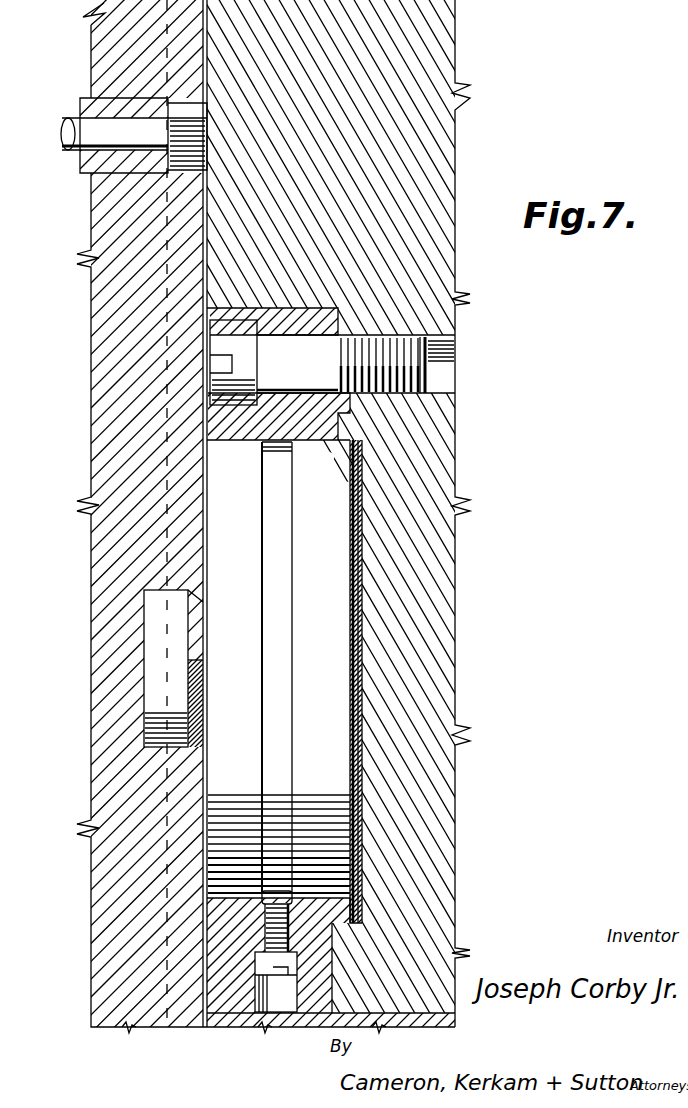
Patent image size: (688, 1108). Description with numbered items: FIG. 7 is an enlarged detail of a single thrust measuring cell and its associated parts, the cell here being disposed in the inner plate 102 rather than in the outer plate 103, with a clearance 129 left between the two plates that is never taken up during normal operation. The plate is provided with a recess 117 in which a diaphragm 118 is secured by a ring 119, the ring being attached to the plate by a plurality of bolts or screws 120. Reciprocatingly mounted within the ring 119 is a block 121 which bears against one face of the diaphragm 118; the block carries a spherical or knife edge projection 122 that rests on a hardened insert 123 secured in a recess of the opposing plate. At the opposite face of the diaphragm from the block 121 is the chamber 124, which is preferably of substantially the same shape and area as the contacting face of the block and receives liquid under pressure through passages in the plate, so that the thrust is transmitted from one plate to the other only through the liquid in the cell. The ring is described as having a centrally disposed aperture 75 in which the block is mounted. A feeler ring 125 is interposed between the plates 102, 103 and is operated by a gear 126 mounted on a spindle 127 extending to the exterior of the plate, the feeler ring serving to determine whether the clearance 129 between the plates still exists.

The aperture 75 is at (278, 442).
The plate 102 is at (445, 608).
The outer plate 103 is at (100, 888).
The recess 117 is at (338, 322).
The diaphragm 118 is at (350, 680).
The ring 119 is at (290, 320).
The bolt or screw 120 is at (378, 343).
The block 121 is at (342, 547).
The spherical or knife edge projection 122 is at (200, 672).
The hardened insert 123 is at (162, 748).
The chamber 124 is at (362, 767).
The feeler ring 125 is at (198, 62).
The gear 126 is at (197, 142).
The spindle 127 is at (68, 153).
The clearance 129 is at (205, 820).